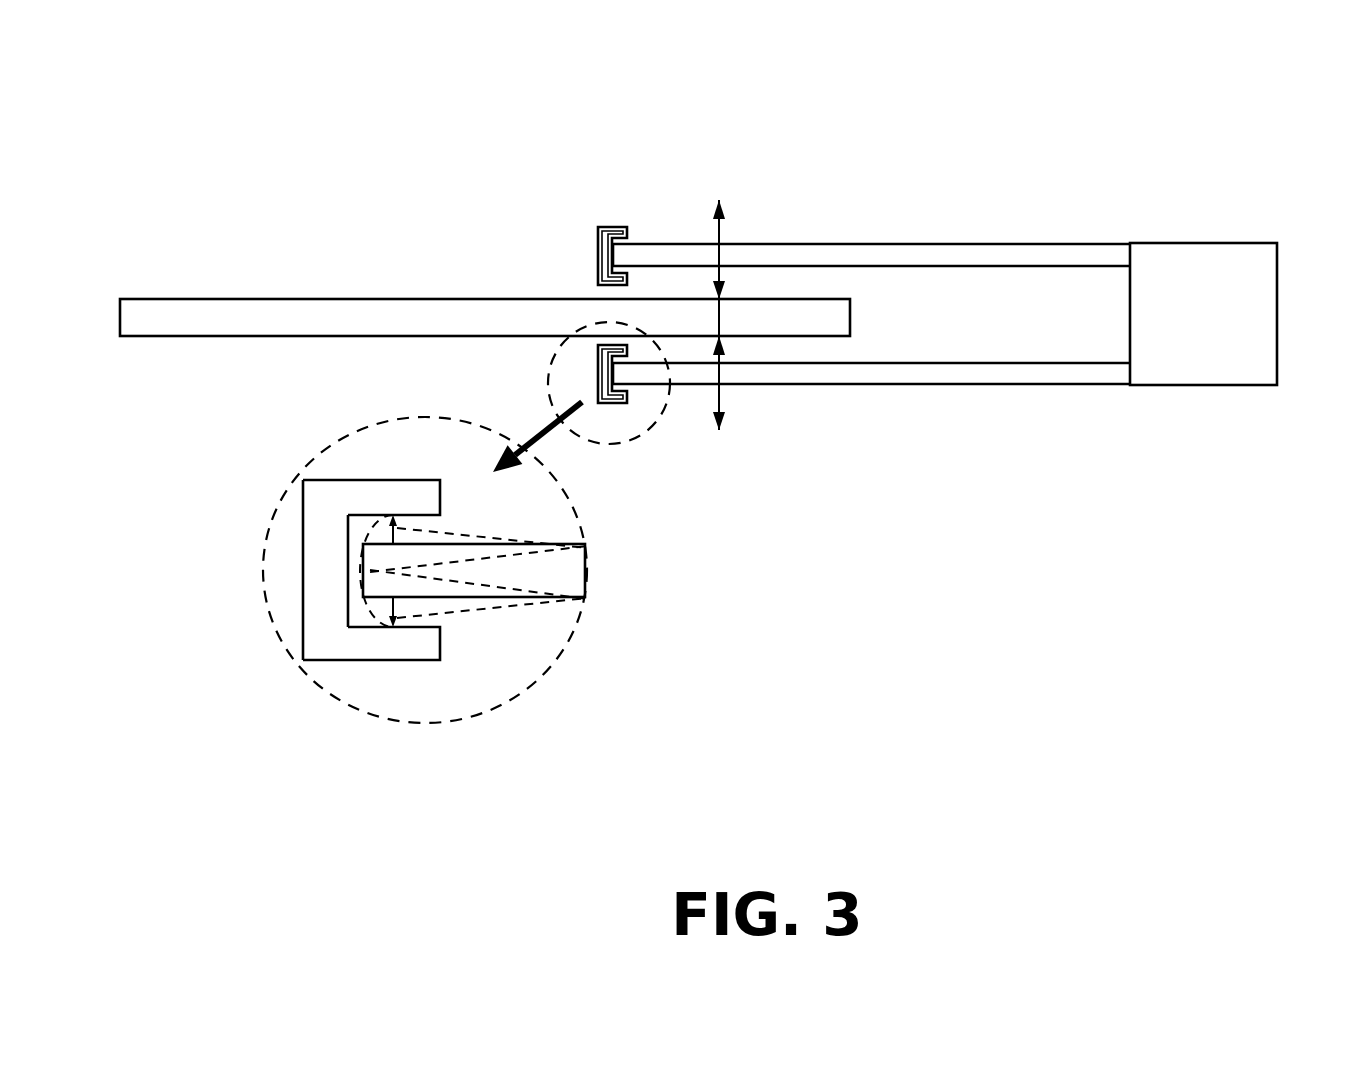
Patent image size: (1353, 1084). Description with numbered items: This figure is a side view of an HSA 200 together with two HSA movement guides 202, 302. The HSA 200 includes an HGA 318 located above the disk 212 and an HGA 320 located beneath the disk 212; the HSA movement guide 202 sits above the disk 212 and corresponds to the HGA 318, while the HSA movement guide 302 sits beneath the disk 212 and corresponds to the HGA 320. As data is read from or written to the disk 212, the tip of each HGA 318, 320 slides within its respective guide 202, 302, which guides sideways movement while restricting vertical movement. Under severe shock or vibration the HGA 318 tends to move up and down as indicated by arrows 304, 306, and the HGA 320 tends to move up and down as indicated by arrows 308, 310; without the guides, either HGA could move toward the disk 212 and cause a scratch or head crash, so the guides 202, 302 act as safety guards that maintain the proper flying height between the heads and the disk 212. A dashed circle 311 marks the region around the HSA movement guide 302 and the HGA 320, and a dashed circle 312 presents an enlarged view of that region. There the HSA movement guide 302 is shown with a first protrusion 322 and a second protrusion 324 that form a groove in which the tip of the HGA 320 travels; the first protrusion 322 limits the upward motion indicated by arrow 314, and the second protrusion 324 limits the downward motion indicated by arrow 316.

The HSA 200 is at (1190, 242).
The HSA movement guide 202 is at (600, 250).
The disk 212 is at (260, 317).
The HSA movement guide 302 is at (595, 373).
The arrow 304 is at (722, 232).
The arrow 306 is at (722, 284).
The arrow 308 is at (722, 352).
The arrow 310 is at (722, 404).
The dashed circle 311 is at (630, 440).
The dashed circle 312 is at (265, 597).
The arrow 314 is at (400, 526).
The arrow 316 is at (400, 618).
The HGA 318 is at (1022, 257).
The HGA 320 is at (1080, 370).
The first protrusion 322 is at (398, 480).
The second protrusion 324 is at (393, 660).